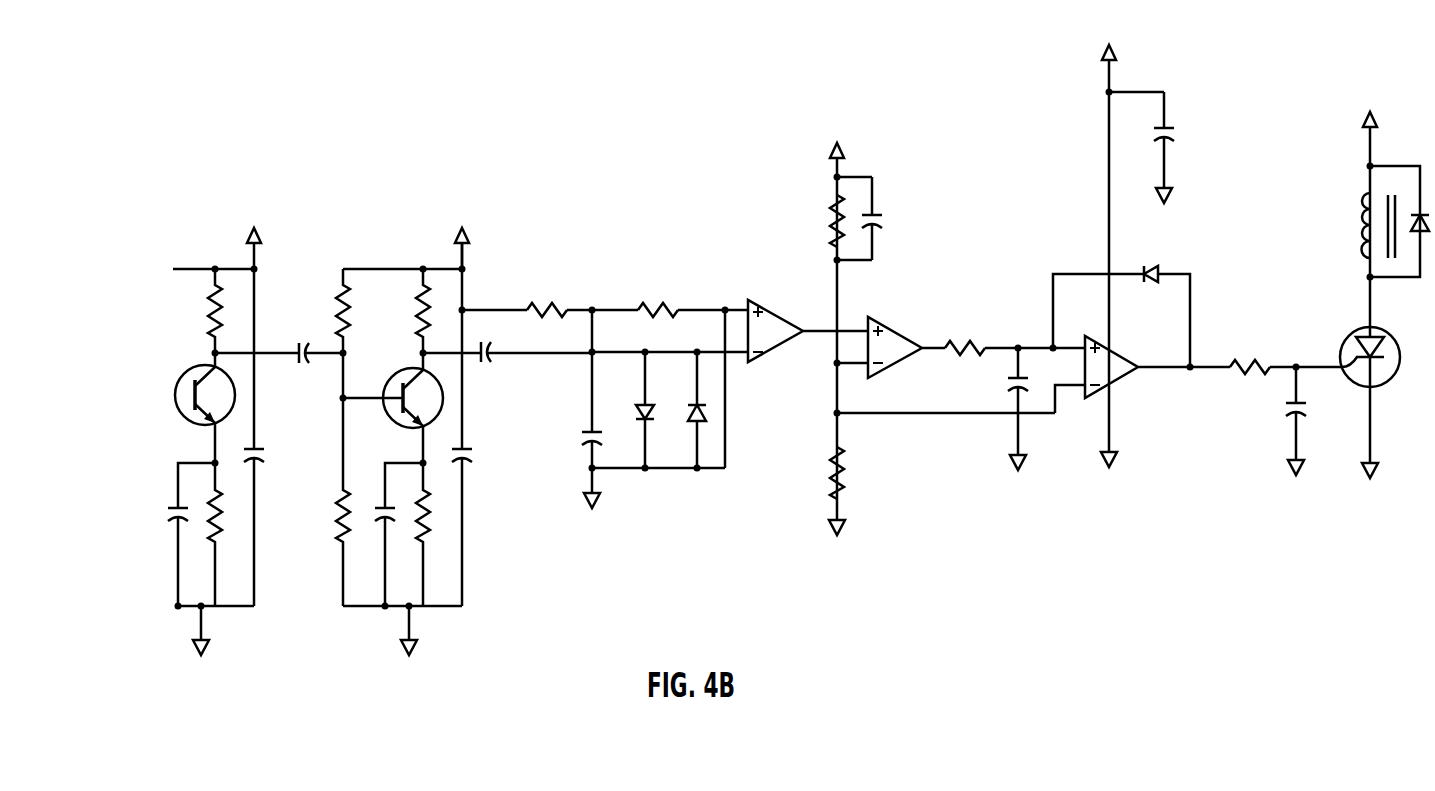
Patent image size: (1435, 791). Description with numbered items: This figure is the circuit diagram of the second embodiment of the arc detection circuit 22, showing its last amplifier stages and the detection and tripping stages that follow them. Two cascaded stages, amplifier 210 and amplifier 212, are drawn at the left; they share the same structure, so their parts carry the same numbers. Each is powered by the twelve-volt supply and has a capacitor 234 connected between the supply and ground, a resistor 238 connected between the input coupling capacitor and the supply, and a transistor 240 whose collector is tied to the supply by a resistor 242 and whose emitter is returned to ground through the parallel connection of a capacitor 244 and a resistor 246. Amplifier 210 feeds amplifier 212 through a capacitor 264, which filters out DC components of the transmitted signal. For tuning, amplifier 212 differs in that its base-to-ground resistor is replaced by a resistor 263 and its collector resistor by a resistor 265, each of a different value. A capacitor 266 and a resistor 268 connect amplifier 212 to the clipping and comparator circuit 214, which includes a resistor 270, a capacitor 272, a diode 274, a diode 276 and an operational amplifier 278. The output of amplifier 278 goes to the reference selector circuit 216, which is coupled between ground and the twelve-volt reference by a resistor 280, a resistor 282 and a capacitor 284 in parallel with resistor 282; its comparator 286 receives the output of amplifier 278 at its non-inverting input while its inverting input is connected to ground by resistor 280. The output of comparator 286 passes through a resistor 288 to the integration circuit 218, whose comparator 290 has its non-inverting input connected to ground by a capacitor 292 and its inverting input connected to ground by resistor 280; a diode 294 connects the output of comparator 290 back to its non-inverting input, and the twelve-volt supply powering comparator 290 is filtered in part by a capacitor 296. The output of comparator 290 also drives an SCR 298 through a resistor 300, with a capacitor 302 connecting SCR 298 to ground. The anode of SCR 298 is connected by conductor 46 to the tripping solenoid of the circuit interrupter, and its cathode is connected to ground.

The control circuit 22 is at (805, 522).
The conductor 46 is at (1368, 297).
The amplifier 210 is at (212, 655).
The amplifier 212 is at (562, 527).
The clipping and comparator circuit 214 is at (705, 492).
The reference selector circuit 216 is at (940, 280).
The integration circuit 218 is at (1072, 478).
The capacitor 234 is at (265, 453).
The resistor 238 is at (340, 310).
The transistor 240 is at (235, 392).
The resistor 242 is at (213, 320).
The capacitor 244 is at (185, 526).
The resistor 246 is at (223, 505).
The resistor 263 is at (341, 505).
The capacitor 264 is at (303, 345).
The resistor 265 is at (421, 318).
The capacitor 266 is at (488, 344).
The resistor 268 is at (548, 305).
The resistor 270 is at (659, 305).
The capacitor 272 is at (588, 433).
The diode 274 is at (639, 413).
The diode 276 is at (690, 413).
The operational amplifier 278 is at (771, 305).
The resistor 280 is at (833, 463).
The resistor 282 is at (833, 215).
The capacitor 284 is at (877, 215).
The comparator 286 is at (886, 320).
The resistor 288 is at (966, 343).
The comparator 290 is at (1122, 350).
The capacitor 292 is at (1012, 386).
The diode 294 is at (1151, 268).
The capacitor 296 is at (1172, 137).
The SCR 298 is at (1391, 336).
The resistor 300 is at (1250, 361).
The capacitor 302 is at (1302, 410).